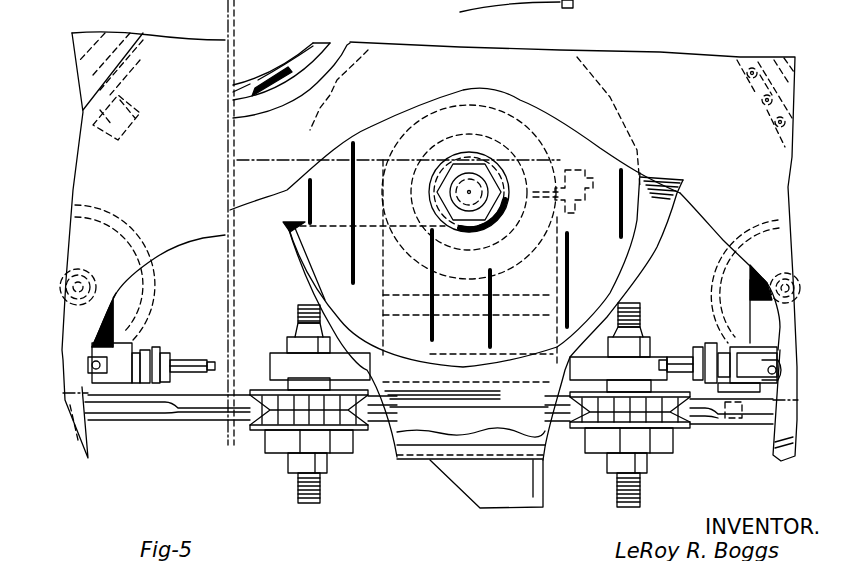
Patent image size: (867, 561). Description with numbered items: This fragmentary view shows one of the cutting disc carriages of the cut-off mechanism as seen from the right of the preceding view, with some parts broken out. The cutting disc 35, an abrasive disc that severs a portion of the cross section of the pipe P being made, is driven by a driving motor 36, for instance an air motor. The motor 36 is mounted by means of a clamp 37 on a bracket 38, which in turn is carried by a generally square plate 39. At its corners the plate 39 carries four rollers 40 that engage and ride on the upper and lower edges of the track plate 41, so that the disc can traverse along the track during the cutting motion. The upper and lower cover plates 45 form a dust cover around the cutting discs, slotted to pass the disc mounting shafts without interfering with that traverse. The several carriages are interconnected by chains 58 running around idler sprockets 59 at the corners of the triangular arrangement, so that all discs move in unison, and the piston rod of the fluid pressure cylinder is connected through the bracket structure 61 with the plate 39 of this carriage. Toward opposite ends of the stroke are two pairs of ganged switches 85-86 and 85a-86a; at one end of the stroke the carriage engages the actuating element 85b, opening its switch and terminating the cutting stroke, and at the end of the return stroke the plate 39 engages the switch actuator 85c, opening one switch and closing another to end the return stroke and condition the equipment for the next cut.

The cover plates 45 is at (178, 40).
The pipe P is at (292, 63).
The chains 58 is at (772, 118).
The idler sprockets 59 is at (147, 243).
The driving motor 36 is at (511, 86).
The clamp 37 is at (565, 127).
The cutting disc 35 is at (607, 263).
The bracket 38 is at (386, 314).
The square plate 39 is at (253, 368).
The rollers 40 is at (255, 430).
The track plate 41 is at (377, 430).
The bracket structure 61 is at (462, 493).
The ganged switches 85-86 is at (118, 378).
The actuating element 85b is at (187, 357).
The ganged switches 85a-86a is at (747, 347).
The switch actuator 85c is at (673, 362).